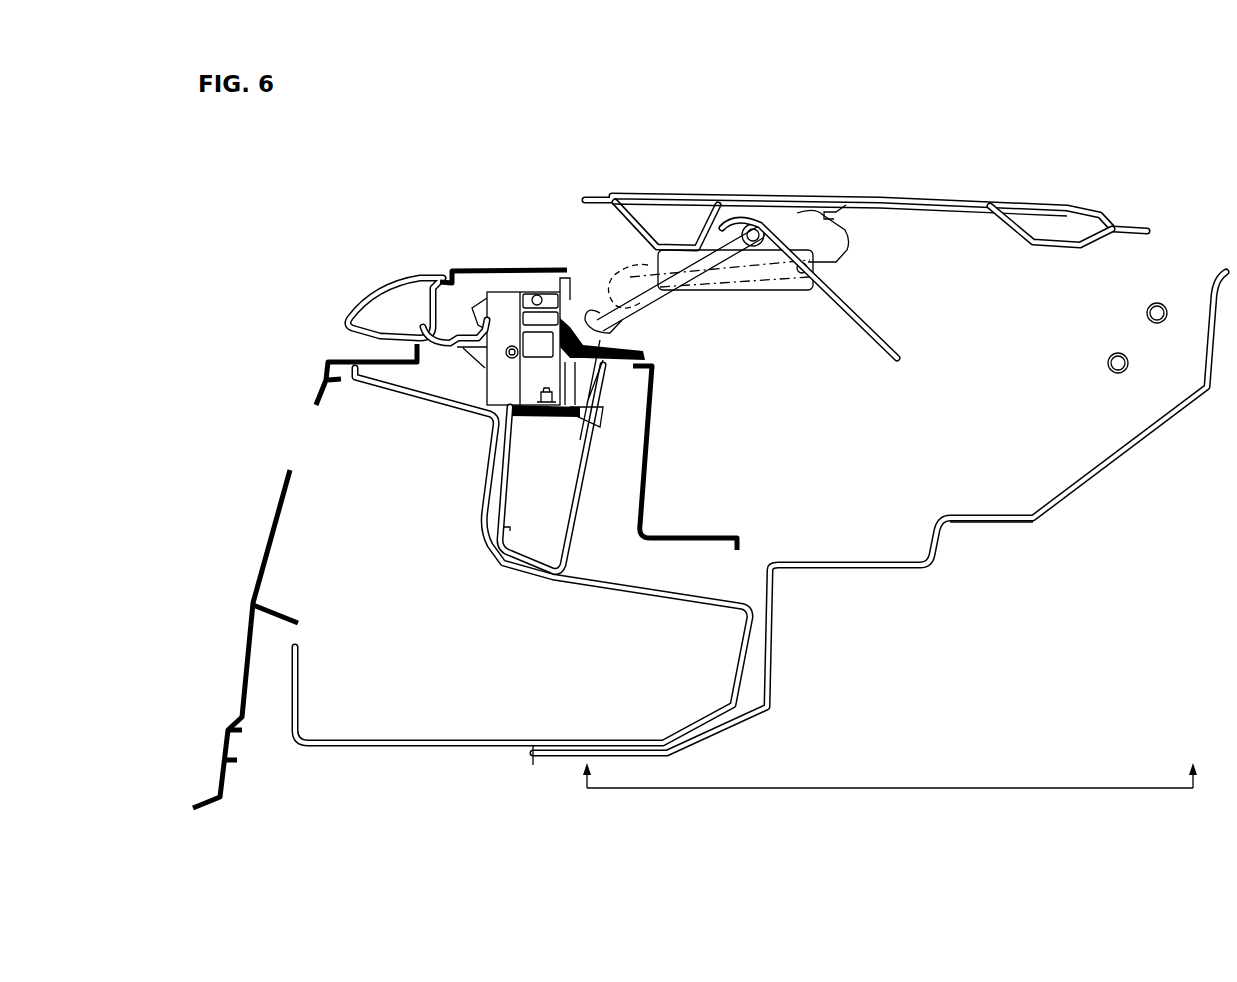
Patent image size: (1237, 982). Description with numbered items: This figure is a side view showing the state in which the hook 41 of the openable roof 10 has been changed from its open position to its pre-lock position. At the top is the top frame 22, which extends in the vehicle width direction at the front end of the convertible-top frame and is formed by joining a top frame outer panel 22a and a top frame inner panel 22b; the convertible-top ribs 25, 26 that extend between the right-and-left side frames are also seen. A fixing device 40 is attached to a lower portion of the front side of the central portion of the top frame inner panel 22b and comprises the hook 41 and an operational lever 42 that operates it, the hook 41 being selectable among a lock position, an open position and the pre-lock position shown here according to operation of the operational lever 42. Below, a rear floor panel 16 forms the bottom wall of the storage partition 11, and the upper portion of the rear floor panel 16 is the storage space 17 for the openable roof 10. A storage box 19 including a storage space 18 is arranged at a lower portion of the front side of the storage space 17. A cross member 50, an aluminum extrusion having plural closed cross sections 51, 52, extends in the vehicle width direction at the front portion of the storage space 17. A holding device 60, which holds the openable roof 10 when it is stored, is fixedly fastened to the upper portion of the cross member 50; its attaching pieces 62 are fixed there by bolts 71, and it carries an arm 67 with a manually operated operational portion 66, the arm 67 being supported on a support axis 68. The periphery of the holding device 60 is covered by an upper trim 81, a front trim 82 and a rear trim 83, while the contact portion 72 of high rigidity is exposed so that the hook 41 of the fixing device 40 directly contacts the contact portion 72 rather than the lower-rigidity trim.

The openable roof 10 is at (880, 197).
The storage partition 11 is at (912, 780).
The rear floor panel 16 is at (972, 523).
The storage space 17 is at (914, 452).
The storage space 18 is at (424, 645).
The storage box 19 is at (378, 744).
The top frame 22 is at (778, 197).
The top frame outer panel 22a is at (927, 192).
The top frame inner panel 22b is at (973, 211).
The convertible-top rib 25 is at (1129, 366).
The convertible-top rib 26 is at (1163, 304).
The fixing device 40 is at (845, 255).
The hook 41 is at (640, 311).
The operational lever 42 is at (888, 334).
The cross member 50 is at (594, 517).
The closed cross section 51 is at (584, 415).
The closed cross section 52 is at (552, 498).
The holding device 60 is at (497, 291).
The attaching piece 62 is at (527, 411).
The operational portion 66 is at (372, 290).
The arm 67 is at (450, 338).
The support axis 68 is at (538, 296).
The bolt 71 is at (543, 391).
The contact portion 72 is at (647, 351).
The upper trim 81 is at (462, 268).
The front trim 82 is at (316, 397).
The rear trim 83 is at (653, 430).